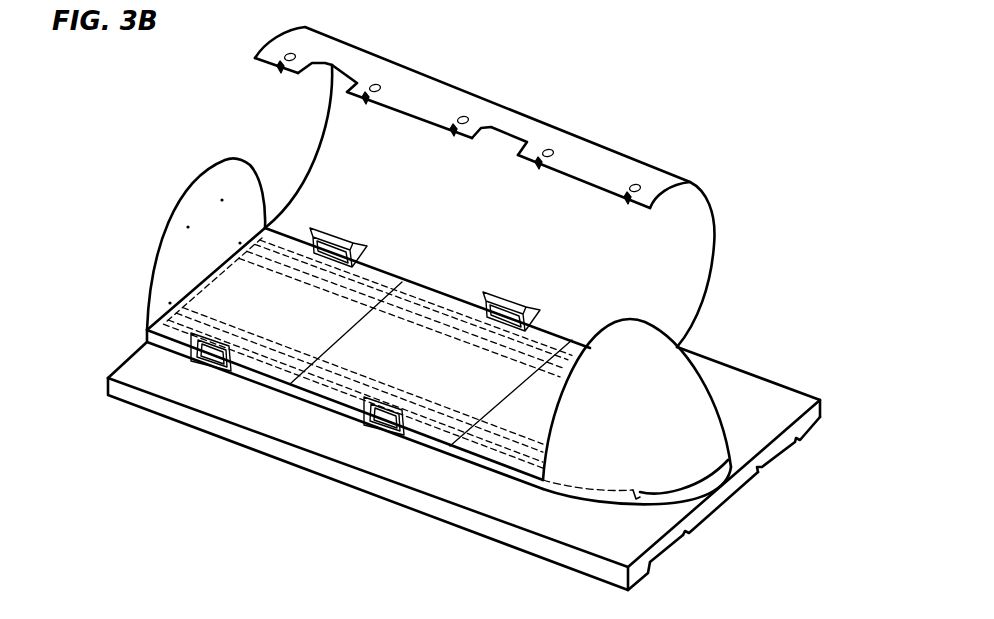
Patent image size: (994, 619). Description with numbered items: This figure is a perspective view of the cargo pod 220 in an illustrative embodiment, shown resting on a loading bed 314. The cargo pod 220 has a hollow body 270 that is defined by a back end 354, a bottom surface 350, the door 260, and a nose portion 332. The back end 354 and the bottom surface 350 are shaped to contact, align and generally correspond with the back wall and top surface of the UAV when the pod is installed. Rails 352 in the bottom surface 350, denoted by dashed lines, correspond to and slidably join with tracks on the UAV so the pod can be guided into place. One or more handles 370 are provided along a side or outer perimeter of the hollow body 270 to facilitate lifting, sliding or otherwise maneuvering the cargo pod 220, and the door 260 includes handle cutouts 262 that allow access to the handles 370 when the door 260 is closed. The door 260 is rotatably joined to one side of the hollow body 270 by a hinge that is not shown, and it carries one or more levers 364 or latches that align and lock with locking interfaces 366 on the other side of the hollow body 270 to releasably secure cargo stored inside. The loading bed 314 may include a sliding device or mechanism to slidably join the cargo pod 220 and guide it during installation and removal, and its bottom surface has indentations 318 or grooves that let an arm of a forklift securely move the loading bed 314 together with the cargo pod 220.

The cargo pod 220 is at (766, 149).
The door 260 is at (627, 155).
The handle cutouts 262 is at (329, 72).
The hollow body 270 is at (190, 262).
The loading bed 314 is at (765, 402).
The indentations 318 is at (782, 447).
The nose portion 332 is at (726, 487).
The bottom surface 350 is at (172, 347).
The rails 352 is at (262, 347).
The back end 354 is at (227, 180).
The levers 364 is at (464, 117).
The locking interfaces 366 is at (257, 368).
The handles 370 is at (341, 250).